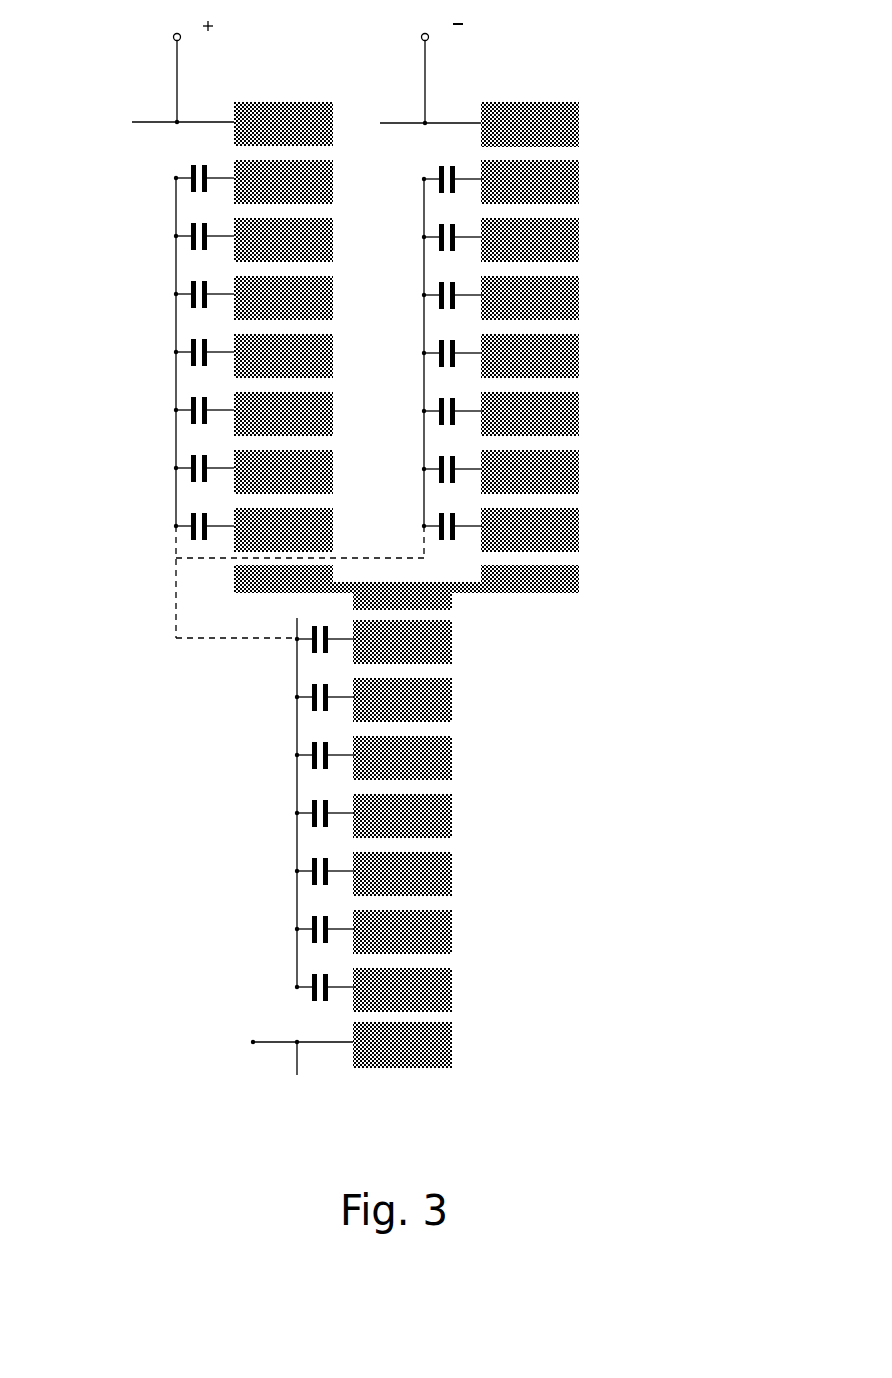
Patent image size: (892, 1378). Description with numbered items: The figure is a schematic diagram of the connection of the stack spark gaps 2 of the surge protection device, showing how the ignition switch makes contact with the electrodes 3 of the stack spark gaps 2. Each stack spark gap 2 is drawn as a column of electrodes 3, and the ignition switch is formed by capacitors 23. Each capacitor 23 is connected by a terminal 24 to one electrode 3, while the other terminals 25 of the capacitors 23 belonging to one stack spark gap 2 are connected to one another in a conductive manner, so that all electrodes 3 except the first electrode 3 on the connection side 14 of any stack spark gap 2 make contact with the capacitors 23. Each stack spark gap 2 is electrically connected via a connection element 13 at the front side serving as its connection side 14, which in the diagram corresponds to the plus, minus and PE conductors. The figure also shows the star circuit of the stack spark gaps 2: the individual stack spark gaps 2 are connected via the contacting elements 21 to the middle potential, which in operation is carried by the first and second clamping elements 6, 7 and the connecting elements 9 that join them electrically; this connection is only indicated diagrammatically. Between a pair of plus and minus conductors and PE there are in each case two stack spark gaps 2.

The stack spark gap 2 is at (372, 604).
The electrode 3 is at (437, 938).
The first electrically conductive clamping element 6 is at (227, 659).
The second electrically conductive clamping element 7 is at (227, 659).
The connecting element 9 is at (328, 585).
The connection element 13 is at (145, 122).
The connection side 14 is at (282, 85).
The contacting element 21 is at (399, 659).
The capacitor 23 is at (309, 938).
The terminal 24 is at (345, 758).
The other terminal 25 is at (299, 757).